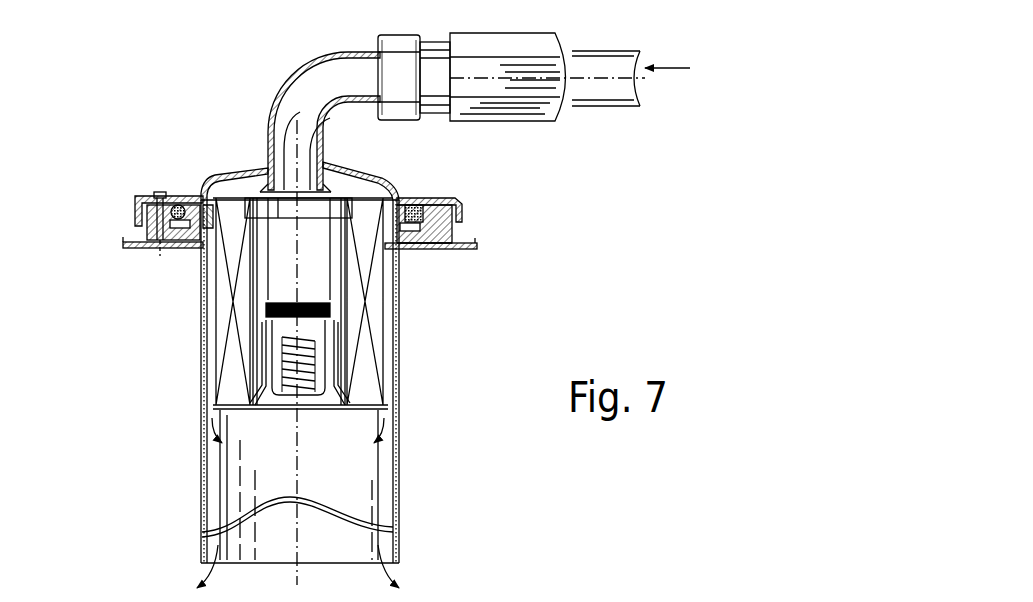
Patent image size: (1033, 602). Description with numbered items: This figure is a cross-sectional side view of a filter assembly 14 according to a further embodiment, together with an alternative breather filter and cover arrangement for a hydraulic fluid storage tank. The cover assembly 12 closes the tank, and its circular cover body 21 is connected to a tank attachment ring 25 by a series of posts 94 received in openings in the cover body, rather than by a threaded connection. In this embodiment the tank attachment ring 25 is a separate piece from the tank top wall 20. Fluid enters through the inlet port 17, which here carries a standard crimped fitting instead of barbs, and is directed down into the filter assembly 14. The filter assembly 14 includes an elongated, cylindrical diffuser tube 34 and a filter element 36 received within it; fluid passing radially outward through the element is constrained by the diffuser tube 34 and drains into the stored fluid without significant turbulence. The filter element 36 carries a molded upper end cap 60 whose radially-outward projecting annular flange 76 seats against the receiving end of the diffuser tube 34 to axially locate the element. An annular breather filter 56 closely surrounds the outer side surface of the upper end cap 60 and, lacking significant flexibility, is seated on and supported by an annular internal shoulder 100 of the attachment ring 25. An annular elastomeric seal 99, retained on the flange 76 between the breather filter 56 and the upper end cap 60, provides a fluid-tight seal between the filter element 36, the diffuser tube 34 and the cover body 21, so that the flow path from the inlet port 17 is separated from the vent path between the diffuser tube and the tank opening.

The cover assembly 12 is at (372, 162).
The filter assembly 14 is at (125, 393).
The inlet port 17 is at (340, 57).
The top wall 20 is at (465, 249).
The cover body 21 is at (387, 197).
The tank attachment ring 25 is at (455, 237).
The diffuser tube 34 is at (395, 362).
The filter element 36 is at (388, 332).
The breather filter 56 is at (430, 198).
The upper end cap 60 is at (248, 170).
The annular flange 76 is at (412, 203).
The posts 94 is at (160, 193).
The annular elastomeric seal 99 is at (198, 197).
The annular internal shoulder 100 is at (410, 249).